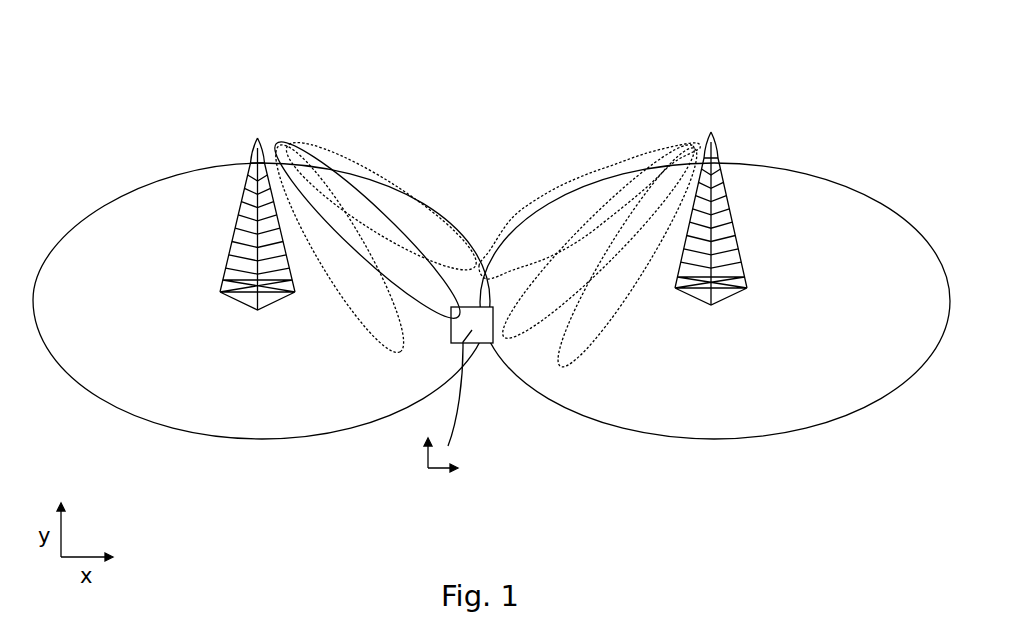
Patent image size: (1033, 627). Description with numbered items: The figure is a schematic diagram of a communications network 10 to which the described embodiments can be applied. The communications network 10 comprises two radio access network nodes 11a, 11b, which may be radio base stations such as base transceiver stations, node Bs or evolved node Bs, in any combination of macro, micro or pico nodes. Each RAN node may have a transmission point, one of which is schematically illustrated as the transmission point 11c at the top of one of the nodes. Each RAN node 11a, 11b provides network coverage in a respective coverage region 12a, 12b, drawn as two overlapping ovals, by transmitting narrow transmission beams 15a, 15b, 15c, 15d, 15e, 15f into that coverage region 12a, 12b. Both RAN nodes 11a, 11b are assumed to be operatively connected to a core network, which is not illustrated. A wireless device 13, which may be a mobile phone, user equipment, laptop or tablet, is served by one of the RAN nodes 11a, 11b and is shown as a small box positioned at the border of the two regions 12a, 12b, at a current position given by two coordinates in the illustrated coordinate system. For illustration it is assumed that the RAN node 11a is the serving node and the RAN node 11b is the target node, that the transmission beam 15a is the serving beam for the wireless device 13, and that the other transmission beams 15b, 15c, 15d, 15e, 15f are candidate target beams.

The communications network 10 is at (804, 109).
The RAN node 11a is at (220, 292).
The RAN node 11b is at (746, 283).
The transmission point 11c is at (254, 156).
The coverage region 12a is at (188, 430).
The coverage region 12b is at (813, 423).
The wireless device 13 is at (480, 344).
The transmission beam 15a is at (330, 165).
The transmission beam 15b is at (400, 183).
The transmission beam 15c is at (346, 318).
The transmission beam 15d is at (608, 165).
The transmission beam 15e is at (507, 333).
The transmission beam 15f is at (563, 370).